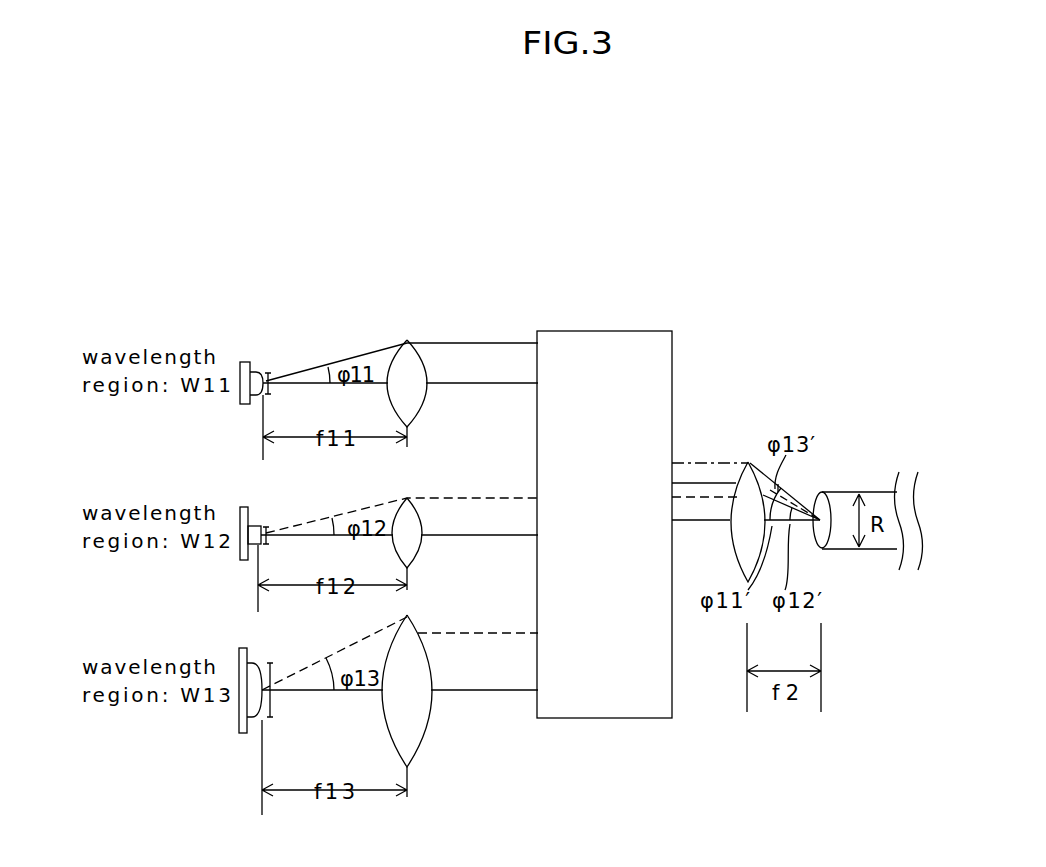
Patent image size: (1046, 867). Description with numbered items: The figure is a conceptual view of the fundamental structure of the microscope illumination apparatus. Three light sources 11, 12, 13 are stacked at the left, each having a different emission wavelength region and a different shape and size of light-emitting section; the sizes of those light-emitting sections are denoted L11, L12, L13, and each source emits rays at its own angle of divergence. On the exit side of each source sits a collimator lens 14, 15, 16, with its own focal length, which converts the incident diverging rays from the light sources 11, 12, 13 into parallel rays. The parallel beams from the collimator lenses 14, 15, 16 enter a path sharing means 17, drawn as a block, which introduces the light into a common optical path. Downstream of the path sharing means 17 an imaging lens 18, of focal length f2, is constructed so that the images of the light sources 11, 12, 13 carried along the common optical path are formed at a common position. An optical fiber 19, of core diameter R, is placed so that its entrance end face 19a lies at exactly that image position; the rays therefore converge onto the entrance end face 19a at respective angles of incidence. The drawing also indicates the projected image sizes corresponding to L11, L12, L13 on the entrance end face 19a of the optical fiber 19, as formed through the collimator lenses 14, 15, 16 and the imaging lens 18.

The light source 11 is at (255, 368).
The light source 12 is at (252, 526).
The light source 13 is at (250, 664).
The collimator lens 14 is at (407, 340).
The collimator lens 15 is at (410, 498).
The collimator lens 16 is at (410, 618).
The path sharing means 17 is at (667, 370).
The imaging lens 18 is at (749, 462).
The optical fiber 19 is at (868, 504).
The entrance end face 19a is at (821, 546).
The size of the light-emitting section L11 is at (280, 374).
The size of the light-emitting section L12 is at (272, 531).
The size of the light-emitting section L13 is at (273, 708).